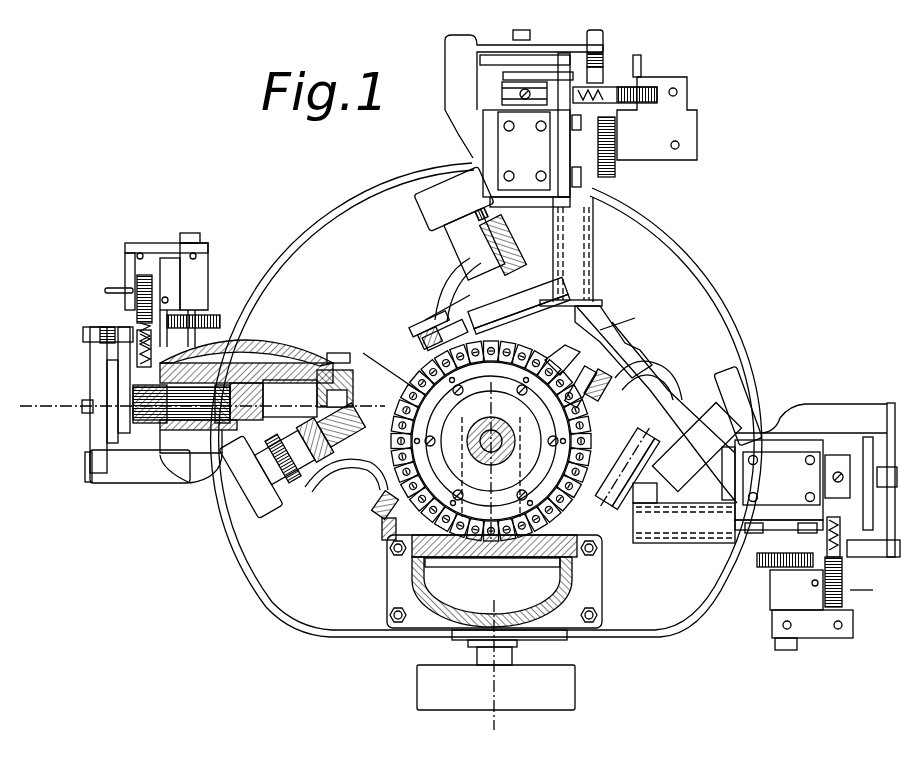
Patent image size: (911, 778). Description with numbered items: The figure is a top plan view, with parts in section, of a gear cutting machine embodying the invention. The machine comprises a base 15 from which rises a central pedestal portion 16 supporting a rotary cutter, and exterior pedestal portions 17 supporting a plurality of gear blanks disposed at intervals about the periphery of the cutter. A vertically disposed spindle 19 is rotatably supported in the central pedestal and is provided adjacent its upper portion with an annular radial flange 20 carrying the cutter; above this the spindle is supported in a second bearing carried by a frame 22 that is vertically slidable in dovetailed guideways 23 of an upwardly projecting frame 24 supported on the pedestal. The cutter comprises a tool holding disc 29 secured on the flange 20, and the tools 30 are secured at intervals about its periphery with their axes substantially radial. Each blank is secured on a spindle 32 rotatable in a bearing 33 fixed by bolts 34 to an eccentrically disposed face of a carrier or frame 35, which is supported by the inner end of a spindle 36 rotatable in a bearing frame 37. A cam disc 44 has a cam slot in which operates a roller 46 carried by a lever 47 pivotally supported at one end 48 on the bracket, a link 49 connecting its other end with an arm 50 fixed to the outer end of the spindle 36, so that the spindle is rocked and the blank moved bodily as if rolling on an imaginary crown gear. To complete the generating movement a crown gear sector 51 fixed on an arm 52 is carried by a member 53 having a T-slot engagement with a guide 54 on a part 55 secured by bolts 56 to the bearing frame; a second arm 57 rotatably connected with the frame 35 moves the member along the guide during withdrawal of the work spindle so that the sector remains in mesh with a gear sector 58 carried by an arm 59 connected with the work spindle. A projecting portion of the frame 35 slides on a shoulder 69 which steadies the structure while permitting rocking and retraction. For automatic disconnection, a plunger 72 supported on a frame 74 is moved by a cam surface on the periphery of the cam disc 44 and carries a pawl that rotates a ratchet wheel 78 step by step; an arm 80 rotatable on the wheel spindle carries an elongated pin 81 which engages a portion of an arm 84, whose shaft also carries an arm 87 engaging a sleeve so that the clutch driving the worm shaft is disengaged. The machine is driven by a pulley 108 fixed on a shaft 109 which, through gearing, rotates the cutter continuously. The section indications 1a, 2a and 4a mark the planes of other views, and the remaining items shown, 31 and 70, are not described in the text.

The base 15 is at (264, 583).
The central pedestal portion 16 is at (612, 348).
The exterior pedestal portions 17 is at (604, 298).
The spindle 19 is at (497, 447).
The annular radial flange 20 is at (500, 430).
The frame 22 is at (537, 550).
The dovetailed guideways 23 is at (557, 516).
The upwardly projecting frame 24 is at (440, 578).
The tool holding disc 29 is at (486, 426).
The tools 30 is at (549, 364).
The clamp 31 is at (590, 300).
The spindle 32 is at (310, 443).
The bearing 33 is at (330, 481).
The bolts 34 is at (490, 231).
The carrier or frame 35 is at (470, 251).
The spindle 36 is at (205, 473).
The bearing frame 37 is at (518, 138).
The cam disc 44 is at (112, 378).
The roller 46 is at (100, 401).
The lever 47 is at (96, 360).
The pivoted end 48 is at (87, 468).
The link 49 is at (104, 328).
The arm 50 is at (140, 413).
The crown gear sector 51 is at (440, 352).
The arm 52 is at (432, 325).
The member 53 is at (592, 231).
The guide 54 is at (578, 212).
The part 55 is at (585, 190).
The bolts 56 is at (590, 178).
The second arm 57 is at (514, 206).
The gear sector 58 is at (422, 335).
The arm 59 is at (446, 270).
The shoulder 69 is at (338, 353).
The block 70 is at (222, 525).
The plunger 72 is at (135, 345).
The frame 74 is at (170, 272).
The ratchet wheel 78 is at (144, 275).
The arm 80 is at (125, 270).
The elongated pin 81 is at (105, 290).
The arm 84 is at (125, 250).
The arm 87 is at (208, 255).
The pulley 108 is at (420, 680).
The shaft 109 is at (476, 652).
The section line 1a is at (192, 402).
The section line 2a is at (495, 555).
The section line 4a is at (281, 404).